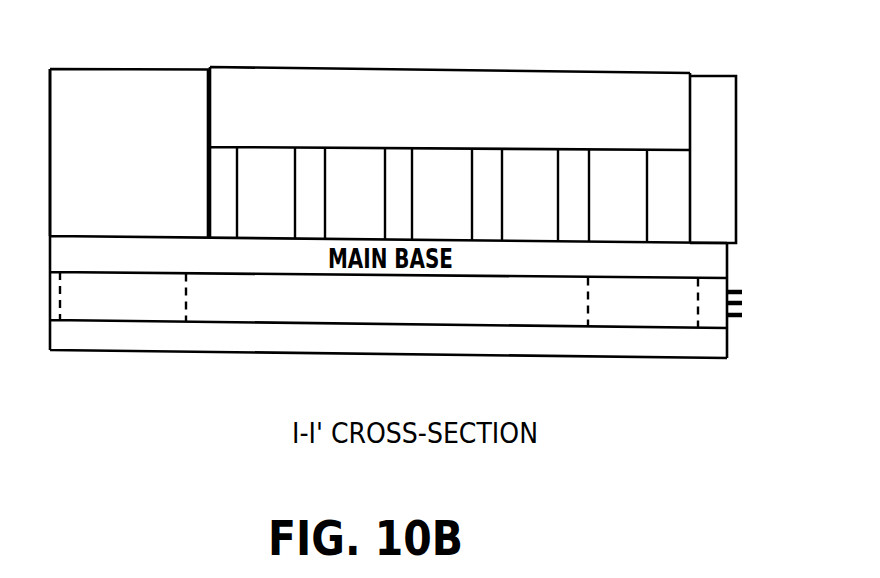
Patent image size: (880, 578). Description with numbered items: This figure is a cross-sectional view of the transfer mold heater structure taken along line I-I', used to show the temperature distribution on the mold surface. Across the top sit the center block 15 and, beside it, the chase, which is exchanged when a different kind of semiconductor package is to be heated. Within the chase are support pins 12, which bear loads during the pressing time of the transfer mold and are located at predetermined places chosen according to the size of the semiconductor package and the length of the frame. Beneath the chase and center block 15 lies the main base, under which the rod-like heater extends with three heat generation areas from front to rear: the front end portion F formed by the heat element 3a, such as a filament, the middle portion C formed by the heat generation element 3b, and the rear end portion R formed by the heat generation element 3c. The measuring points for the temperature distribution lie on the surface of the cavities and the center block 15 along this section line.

The center block 15 is at (129, 131).
The support pins 12 is at (638, 228).
The heat element 3a is at (145, 313).
The heat generation element 3b is at (347, 318).
The heat generation element 3c is at (625, 325).